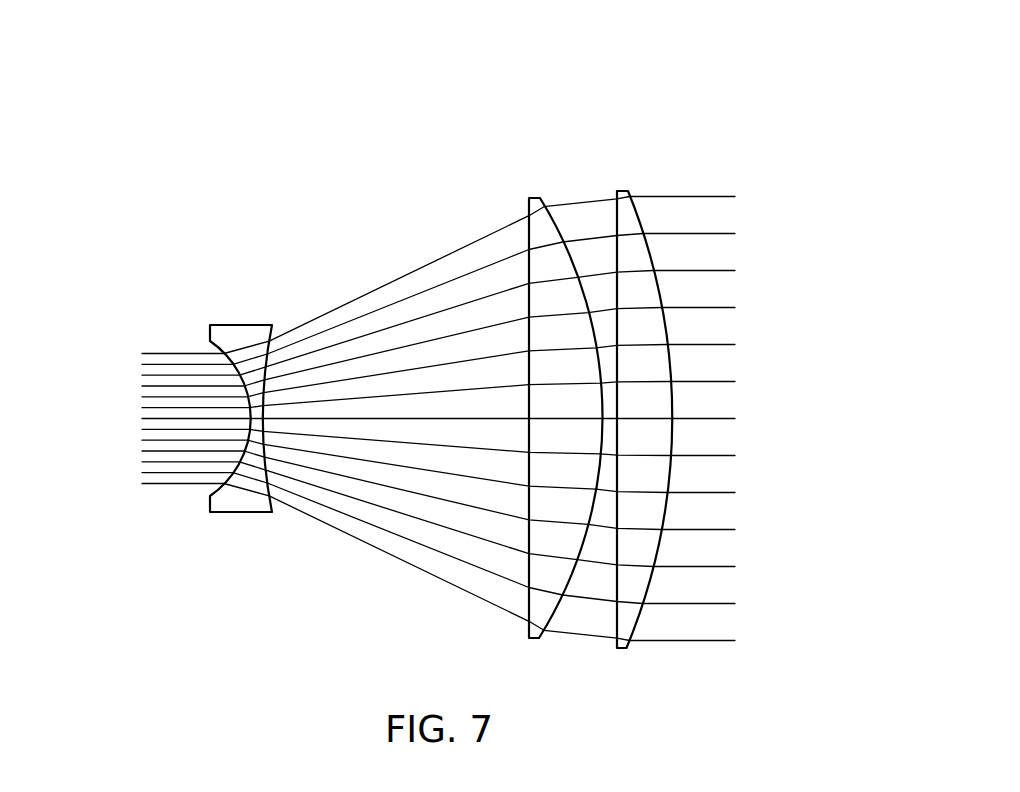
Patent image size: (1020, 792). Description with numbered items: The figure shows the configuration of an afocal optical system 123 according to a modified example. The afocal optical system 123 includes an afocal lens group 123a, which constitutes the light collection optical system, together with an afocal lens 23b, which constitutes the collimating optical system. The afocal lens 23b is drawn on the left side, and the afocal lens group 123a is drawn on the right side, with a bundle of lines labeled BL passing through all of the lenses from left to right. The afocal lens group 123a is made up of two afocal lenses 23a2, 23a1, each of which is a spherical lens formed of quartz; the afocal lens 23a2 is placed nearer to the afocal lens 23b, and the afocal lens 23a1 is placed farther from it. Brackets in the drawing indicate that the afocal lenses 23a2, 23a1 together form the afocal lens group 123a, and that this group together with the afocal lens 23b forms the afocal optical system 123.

The afocal optical system 123 is at (618, 78).
The afocal lens 23b is at (254, 300).
The afocal lens group 123a is at (648, 122).
The afocal lens 23a2 is at (541, 182).
The afocal lens 23a1 is at (622, 174).
The light beam BL is at (343, 535).